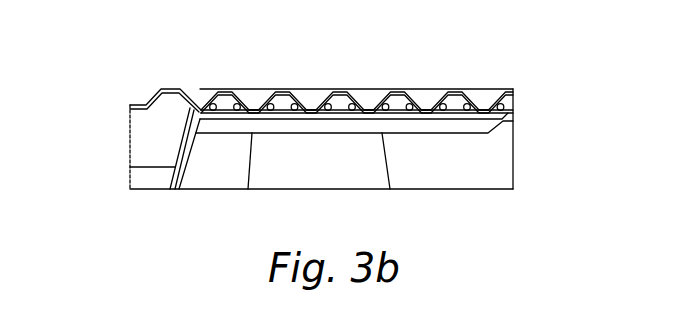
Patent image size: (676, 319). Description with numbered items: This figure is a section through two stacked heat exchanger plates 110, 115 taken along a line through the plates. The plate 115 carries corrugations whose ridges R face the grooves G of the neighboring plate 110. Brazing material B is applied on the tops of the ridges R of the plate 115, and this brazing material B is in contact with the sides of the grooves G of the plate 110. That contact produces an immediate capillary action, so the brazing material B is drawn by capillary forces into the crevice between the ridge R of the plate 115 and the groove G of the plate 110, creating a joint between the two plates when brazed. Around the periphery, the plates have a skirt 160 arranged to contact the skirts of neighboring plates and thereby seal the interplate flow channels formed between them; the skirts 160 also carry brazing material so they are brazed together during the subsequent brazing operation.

The heat exchanger plate 110 is at (505, 90).
The heat exchanger plate 115 is at (510, 114).
The skirt 160 is at (177, 139).
The ridge R is at (227, 90).
The groove G is at (252, 109).
The brazing material B is at (410, 113).